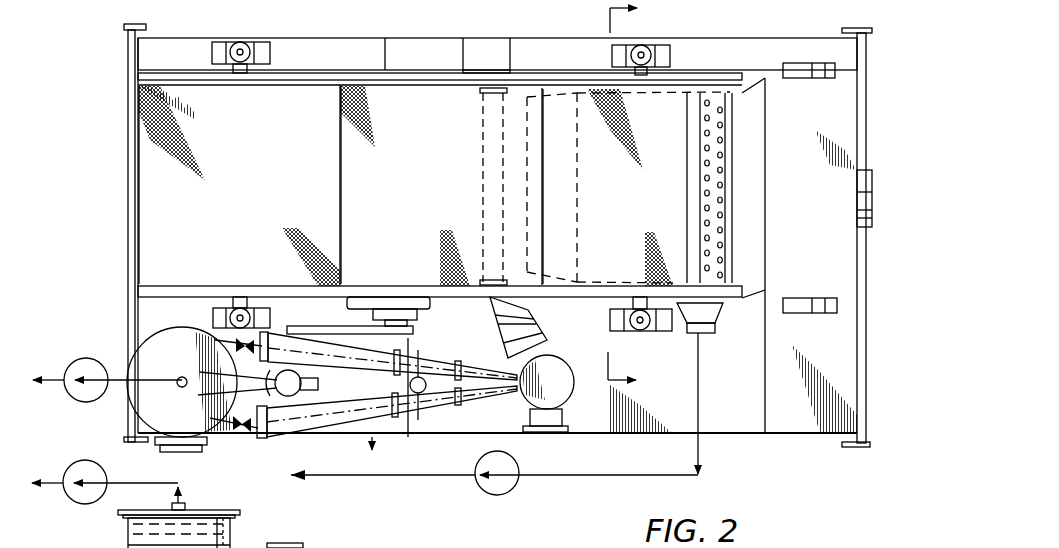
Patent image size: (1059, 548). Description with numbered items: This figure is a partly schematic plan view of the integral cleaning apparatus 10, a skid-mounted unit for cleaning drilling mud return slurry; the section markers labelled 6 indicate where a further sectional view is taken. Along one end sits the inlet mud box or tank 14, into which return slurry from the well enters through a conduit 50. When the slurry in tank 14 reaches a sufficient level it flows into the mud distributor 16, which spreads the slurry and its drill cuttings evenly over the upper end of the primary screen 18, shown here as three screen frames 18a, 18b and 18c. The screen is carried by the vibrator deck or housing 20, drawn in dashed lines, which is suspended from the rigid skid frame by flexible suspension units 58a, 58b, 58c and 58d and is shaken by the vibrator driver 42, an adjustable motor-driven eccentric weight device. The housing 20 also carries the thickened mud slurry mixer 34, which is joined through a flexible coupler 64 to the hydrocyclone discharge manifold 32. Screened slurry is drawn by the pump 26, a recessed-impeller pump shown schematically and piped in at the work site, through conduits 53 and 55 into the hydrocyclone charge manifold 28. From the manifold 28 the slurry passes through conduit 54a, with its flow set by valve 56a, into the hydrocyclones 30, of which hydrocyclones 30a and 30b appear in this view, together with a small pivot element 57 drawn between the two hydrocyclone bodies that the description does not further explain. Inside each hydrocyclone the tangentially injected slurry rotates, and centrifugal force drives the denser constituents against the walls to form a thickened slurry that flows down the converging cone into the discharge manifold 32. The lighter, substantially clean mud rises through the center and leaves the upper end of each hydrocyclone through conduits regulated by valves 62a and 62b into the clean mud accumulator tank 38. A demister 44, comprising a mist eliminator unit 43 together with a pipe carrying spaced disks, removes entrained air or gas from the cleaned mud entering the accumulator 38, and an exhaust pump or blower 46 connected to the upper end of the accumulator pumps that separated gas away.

The integral cleaning apparatus 10 is at (104, 139).
The inlet mud box or tank 14 is at (853, 107).
The mud distributor 16 is at (704, 192).
The primary screen 18 is at (470, 184).
The screen frame 18a is at (587, 108).
The screen frame 18b is at (383, 100).
The screen frame 18c is at (207, 107).
The vibrator deck or housing 20 is at (512, 78).
The pump 26 is at (515, 487).
The hydrocyclone charge manifold 28 is at (272, 432).
The hydrocyclones 30 is at (406, 440).
The hydrocyclone 30a is at (356, 412).
The hydrocyclone 30b is at (327, 412).
The hydrocyclone discharge manifold 32 is at (570, 392).
The thickened mud slurry mixer 34 is at (483, 132).
The clean mud accumulator tank 38 is at (150, 345).
The vibrator driver 42 is at (432, 333).
The mist eliminator unit 43 is at (125, 530).
The demister 44 is at (160, 545).
The exhaust pump or blower 46 is at (88, 357).
The conduit 50 is at (873, 192).
The conduit 53 is at (583, 476).
The conduit 54a is at (275, 378).
The conduit 55 is at (383, 476).
The valve 56a is at (277, 388).
The pivot 57 is at (550, 352).
The flexible suspension unit 58a is at (643, 45).
The flexible suspension unit 58b is at (243, 43).
The flexible suspension unit 58c is at (640, 333).
The flexible suspension unit 58d is at (243, 307).
The valve 62a is at (246, 432).
The valve 62b is at (232, 341).
The flexible coupler 64 is at (506, 350).
The section line 6- 6 is at (630, 197).